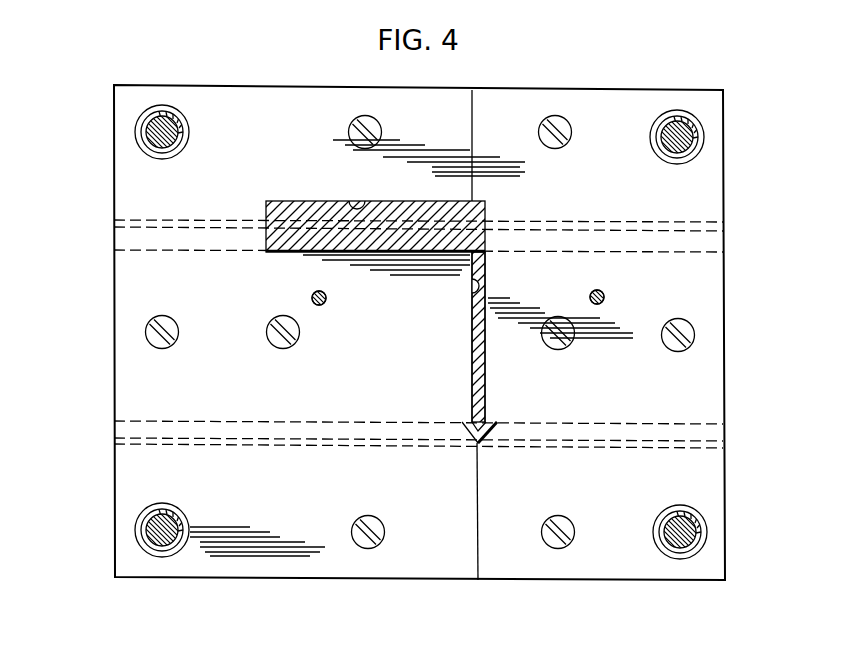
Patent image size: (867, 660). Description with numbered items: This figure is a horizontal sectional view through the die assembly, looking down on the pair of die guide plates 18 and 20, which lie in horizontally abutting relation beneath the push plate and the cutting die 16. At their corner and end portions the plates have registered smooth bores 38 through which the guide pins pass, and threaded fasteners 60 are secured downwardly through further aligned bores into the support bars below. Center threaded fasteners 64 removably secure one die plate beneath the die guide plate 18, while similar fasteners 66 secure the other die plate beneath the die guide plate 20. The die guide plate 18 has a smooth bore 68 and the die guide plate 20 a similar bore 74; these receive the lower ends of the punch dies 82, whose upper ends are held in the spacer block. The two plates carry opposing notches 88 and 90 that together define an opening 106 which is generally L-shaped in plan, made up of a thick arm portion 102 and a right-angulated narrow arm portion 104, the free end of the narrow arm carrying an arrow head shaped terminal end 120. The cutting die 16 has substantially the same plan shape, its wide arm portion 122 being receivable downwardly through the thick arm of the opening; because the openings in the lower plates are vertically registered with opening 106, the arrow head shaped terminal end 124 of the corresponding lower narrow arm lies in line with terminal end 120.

The cutting die 16 is at (466, 217).
The die guide plate 18 is at (712, 207).
The die guide plate 20 is at (124, 198).
The smooth bores 38 is at (142, 130).
The threaded fasteners 60 is at (352, 126).
The center threaded fasteners 64 is at (559, 342).
The fasteners 66 is at (275, 338).
The smooth bore 68 is at (597, 290).
The bore 74 is at (326, 298).
The punch dies 82 is at (604, 297).
The notch 88 is at (487, 277).
The notch 90 is at (358, 207).
The thick arm portion 102 is at (313, 202).
The narrow arm portion 104 is at (486, 376).
The opening 106 is at (452, 255).
The arrow head shaped terminal end 120 is at (470, 440).
The wide arm portion 122 is at (292, 251).
The arrow head shaped terminal end 124 is at (476, 357).